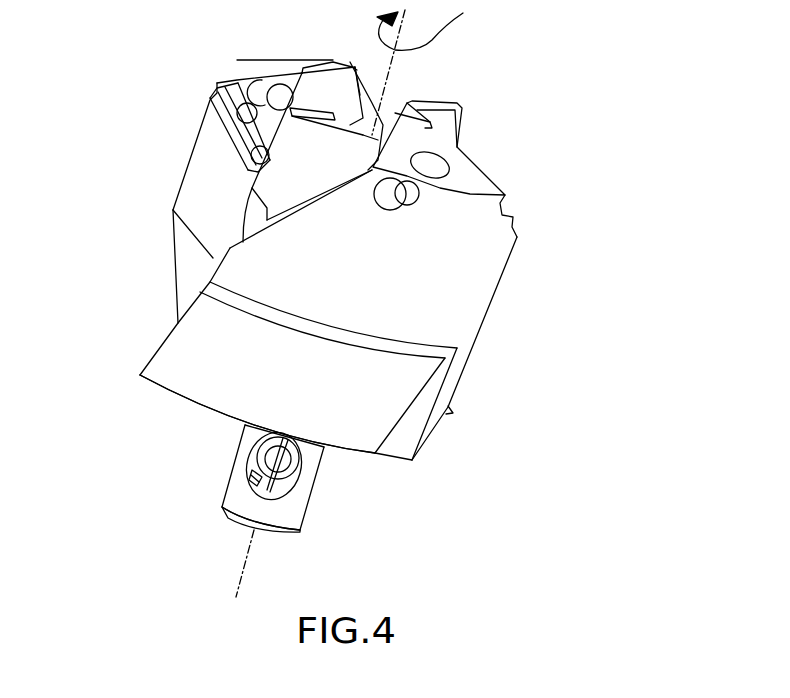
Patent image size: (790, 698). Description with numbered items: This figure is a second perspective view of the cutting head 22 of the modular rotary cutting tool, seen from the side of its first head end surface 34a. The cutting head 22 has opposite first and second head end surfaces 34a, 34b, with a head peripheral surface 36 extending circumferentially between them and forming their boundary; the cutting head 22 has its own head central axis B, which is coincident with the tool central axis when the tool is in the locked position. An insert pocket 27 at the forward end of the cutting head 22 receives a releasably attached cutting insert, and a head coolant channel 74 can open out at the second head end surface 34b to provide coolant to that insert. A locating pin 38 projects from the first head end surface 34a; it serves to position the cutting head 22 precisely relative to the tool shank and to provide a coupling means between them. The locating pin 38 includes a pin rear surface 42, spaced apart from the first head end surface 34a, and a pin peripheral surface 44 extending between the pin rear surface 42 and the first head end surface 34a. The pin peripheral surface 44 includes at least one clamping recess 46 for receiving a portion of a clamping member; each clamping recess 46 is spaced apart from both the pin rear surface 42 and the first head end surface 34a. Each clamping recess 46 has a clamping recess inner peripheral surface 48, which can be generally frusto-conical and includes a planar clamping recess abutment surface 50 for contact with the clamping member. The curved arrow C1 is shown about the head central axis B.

The cutting head 22 is at (545, 108).
The insert pocket 27 is at (262, 86).
The first head end surface 34a is at (173, 408).
The second head end surface 34b is at (443, 90).
The head peripheral surface 36 is at (455, 285).
The locating pin 38 is at (320, 512).
The pin rear surface 42 is at (240, 522).
The pin peripheral surface 44 is at (250, 478).
The clamping recess 46 is at (313, 463).
The clamping recess inner peripheral surface 48 is at (278, 487).
The clamping recess abutment surface 50 is at (255, 473).
The head coolant channel 74 is at (440, 167).
The head central axis B is at (242, 575).
The rotation direction C1 is at (440, 25).